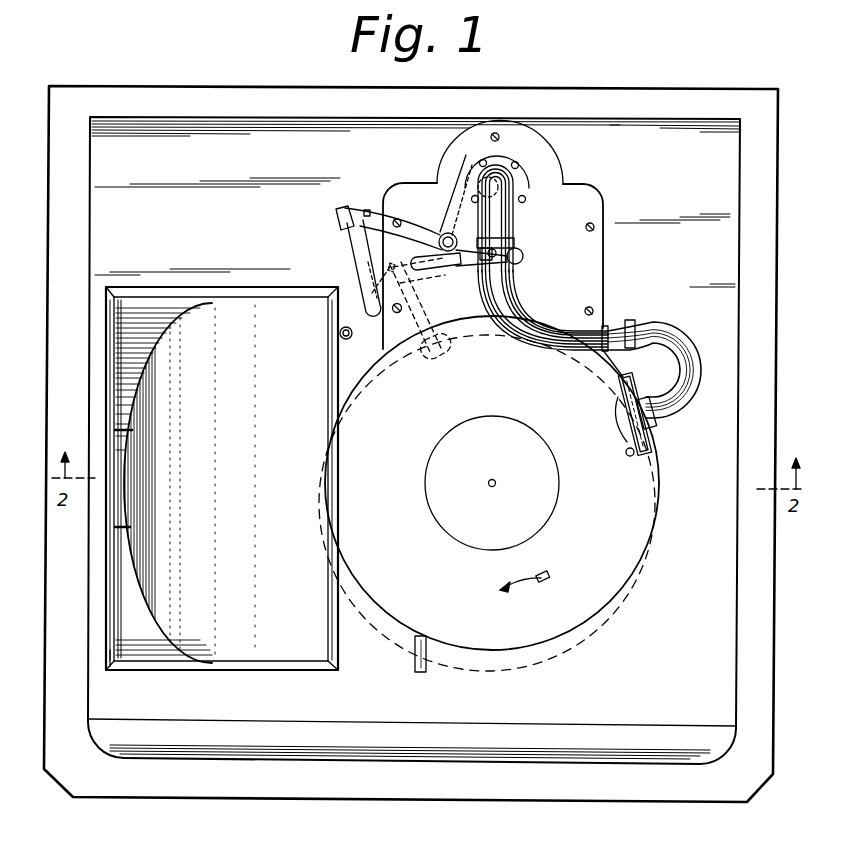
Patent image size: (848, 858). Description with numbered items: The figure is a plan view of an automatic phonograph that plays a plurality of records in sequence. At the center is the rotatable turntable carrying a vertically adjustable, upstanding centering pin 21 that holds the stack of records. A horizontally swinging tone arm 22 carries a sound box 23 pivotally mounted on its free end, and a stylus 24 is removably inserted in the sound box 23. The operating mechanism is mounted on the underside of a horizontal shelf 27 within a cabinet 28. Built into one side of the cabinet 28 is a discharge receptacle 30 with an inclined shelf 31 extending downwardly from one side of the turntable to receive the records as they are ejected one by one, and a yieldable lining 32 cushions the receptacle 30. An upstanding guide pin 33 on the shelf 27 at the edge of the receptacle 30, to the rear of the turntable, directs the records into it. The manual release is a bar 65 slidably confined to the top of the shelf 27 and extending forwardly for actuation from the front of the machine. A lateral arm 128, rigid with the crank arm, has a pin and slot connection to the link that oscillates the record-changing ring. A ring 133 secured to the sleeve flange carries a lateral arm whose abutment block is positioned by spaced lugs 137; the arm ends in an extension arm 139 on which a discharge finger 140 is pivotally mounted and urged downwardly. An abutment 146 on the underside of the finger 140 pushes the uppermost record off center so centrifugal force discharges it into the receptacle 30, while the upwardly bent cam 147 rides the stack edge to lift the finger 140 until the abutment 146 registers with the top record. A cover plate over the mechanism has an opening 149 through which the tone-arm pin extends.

The centering pin 21 is at (497, 480).
The tone arm 22 is at (523, 300).
The sound box 23 is at (688, 346).
The stylus 24 is at (628, 458).
The shelf 27 is at (200, 712).
The cabinet 28 is at (118, 790).
The discharge receptacle 30 is at (125, 620).
The inclined shelf 31 is at (268, 312).
The yieldable lining 32 is at (108, 664).
The guide pin 33 is at (341, 336).
The bar 65 is at (426, 660).
The lateral arm 128 is at (597, 262).
The ring 133 is at (523, 176).
The lugs 137 is at (462, 207).
The extension arm 139 is at (424, 222).
The discharge finger 140 is at (352, 247).
The abutment 146 is at (365, 292).
The cam 147 is at (373, 316).
The opening 149 is at (512, 248).